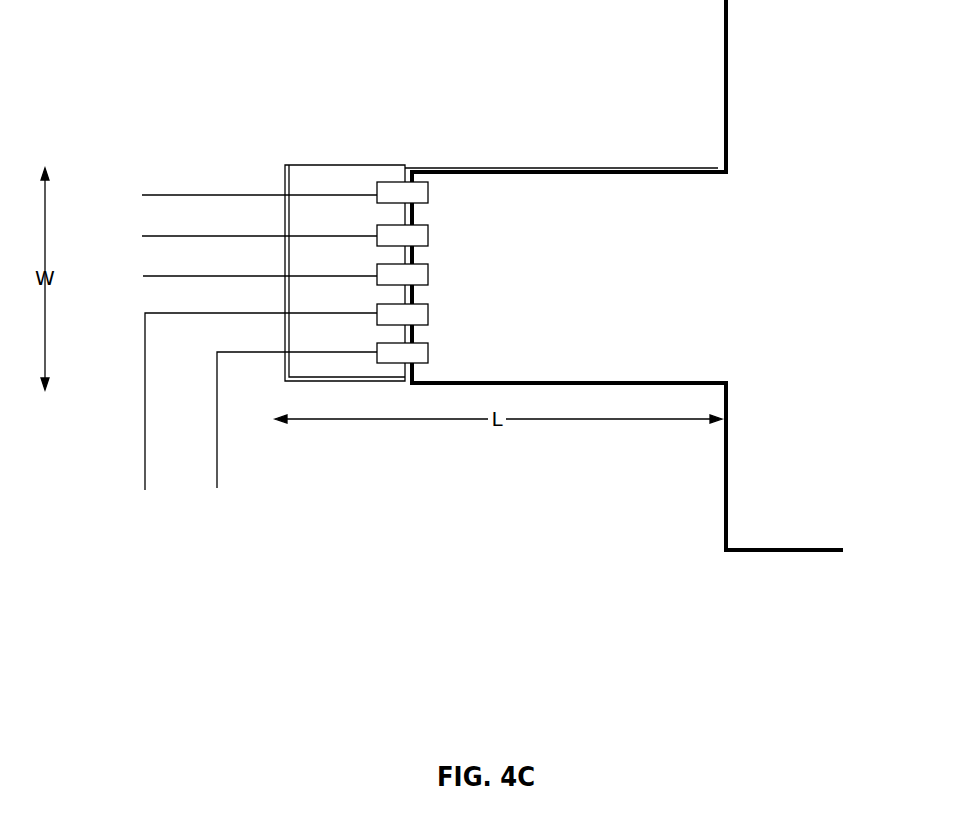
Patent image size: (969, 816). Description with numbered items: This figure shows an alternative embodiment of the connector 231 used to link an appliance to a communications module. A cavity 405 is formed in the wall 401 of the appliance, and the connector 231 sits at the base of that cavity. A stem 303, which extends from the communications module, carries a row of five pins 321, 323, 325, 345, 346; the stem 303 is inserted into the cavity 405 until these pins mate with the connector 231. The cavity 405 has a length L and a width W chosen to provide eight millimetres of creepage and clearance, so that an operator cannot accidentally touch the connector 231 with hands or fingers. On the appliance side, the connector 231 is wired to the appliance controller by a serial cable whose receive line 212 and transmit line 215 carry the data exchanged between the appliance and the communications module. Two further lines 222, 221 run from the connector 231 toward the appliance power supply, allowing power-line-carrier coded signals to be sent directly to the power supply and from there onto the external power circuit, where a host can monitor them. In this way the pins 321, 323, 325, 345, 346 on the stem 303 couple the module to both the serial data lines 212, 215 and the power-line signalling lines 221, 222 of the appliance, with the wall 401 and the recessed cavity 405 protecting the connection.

The receive line 212 is at (165, 236).
The transmit line 215 is at (185, 192).
The line 221 is at (219, 447).
The line 222 is at (145, 454).
The connector 231 is at (363, 160).
The stem 303 is at (568, 244).
The pin 321 is at (428, 192).
The pin 323 is at (428, 236).
The pin 325 is at (428, 278).
The pin 345 is at (428, 314).
The pin 346 is at (428, 353).
The wall 401 is at (725, 70).
The cavity 405 is at (648, 167).